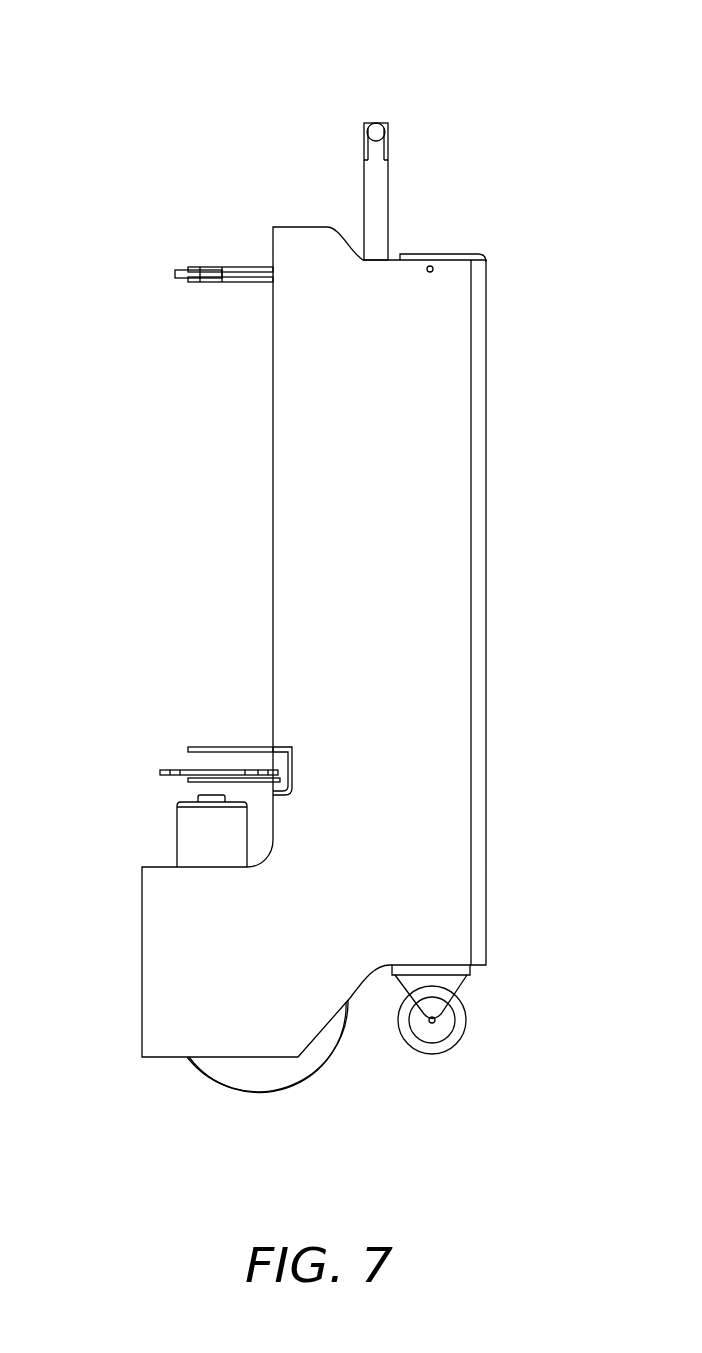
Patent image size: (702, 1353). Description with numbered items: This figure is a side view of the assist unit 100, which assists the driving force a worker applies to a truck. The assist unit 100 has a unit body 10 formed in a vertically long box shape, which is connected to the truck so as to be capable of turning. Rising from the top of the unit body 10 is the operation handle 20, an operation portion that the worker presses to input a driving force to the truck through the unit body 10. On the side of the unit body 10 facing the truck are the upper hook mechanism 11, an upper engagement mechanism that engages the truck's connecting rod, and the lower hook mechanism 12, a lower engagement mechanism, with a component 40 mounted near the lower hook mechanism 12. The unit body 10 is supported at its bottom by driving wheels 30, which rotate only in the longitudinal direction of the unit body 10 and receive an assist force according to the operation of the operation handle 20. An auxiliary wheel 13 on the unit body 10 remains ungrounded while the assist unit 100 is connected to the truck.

The assist unit 100 is at (511, 116).
The unit body 10 is at (430, 487).
The operation handle 20 is at (376, 123).
The upper hook mechanism 11 is at (157, 276).
The lower hook mechanism 12 is at (145, 778).
The motor unit 40 is at (213, 837).
The driving wheels 30 is at (263, 1073).
The auxiliary wheel 13 is at (435, 1045).